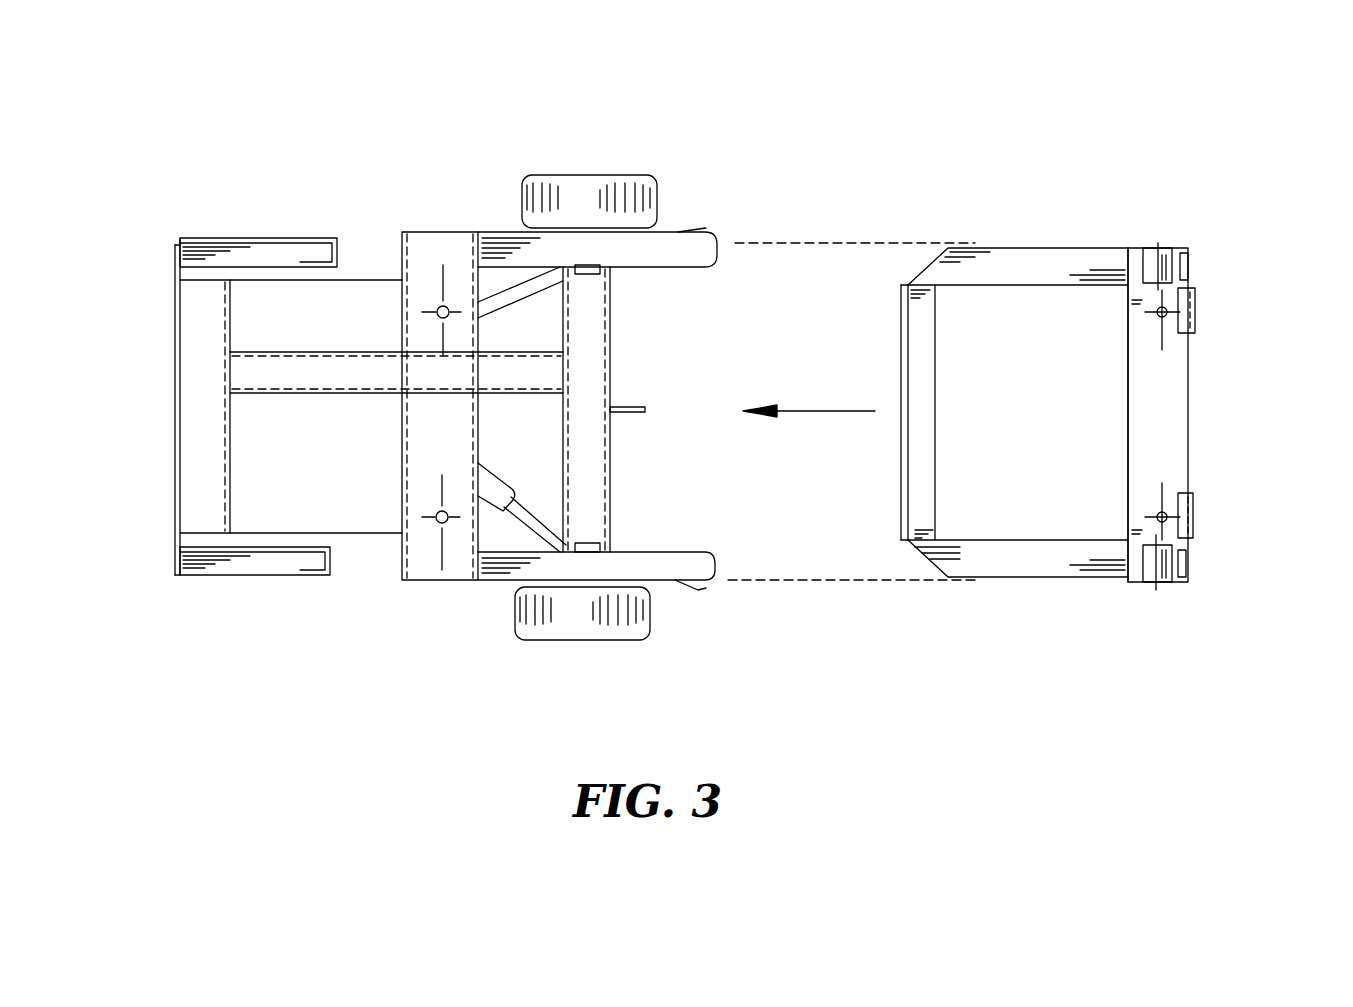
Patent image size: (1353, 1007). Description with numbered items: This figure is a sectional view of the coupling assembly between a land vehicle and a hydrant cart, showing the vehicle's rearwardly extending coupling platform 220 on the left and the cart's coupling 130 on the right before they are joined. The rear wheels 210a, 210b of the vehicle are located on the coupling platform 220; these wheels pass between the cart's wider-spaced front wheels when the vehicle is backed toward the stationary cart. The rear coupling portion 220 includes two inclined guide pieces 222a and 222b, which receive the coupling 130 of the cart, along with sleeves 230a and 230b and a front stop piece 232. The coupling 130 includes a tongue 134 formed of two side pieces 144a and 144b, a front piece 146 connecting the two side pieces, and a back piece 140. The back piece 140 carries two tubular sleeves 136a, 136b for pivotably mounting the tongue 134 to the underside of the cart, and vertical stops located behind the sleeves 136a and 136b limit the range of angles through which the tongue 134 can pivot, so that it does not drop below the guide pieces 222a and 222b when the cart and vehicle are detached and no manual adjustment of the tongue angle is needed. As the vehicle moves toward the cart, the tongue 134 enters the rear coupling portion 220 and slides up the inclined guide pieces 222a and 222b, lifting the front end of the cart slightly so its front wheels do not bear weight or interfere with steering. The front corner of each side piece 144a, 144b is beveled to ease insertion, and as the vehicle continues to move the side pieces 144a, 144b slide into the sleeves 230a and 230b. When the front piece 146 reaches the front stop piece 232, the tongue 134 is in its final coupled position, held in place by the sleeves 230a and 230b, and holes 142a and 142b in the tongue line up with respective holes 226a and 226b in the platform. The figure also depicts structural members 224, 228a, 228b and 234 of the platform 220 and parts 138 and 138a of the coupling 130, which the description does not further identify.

The coupling 130 is at (1350, 458).
The tongue 134 is at (1108, 248).
The tubular sleeve 136a is at (1160, 590).
The tubular sleeve 136b is at (1172, 256).
The latch 138 is at (1196, 307).
The latch 138a is at (1195, 512).
The back piece 140 is at (1189, 402).
The hole 142a is at (1157, 513).
The hole 142b is at (1157, 316).
The side piece 144a is at (1018, 578).
The side piece 144b is at (1047, 248).
The front piece 146 is at (936, 404).
The rear wheel 210a is at (610, 641).
The rear wheel 210b is at (640, 176).
The coupling platform 220 is at (270, 141).
The inclined guide piece 222a is at (715, 590).
The inclined guide piece 222b is at (718, 234).
The transverse frame member 224 is at (402, 500).
The hole 226a is at (438, 522).
The hole 226b is at (440, 309).
The longitudinal frame member 228a is at (258, 533).
The longitudinal frame member 228b is at (297, 283).
The sleeve 230a is at (250, 577).
The sleeve 230b is at (243, 238).
The front stop piece 232 is at (173, 312).
The cross brace 234 is at (231, 470).